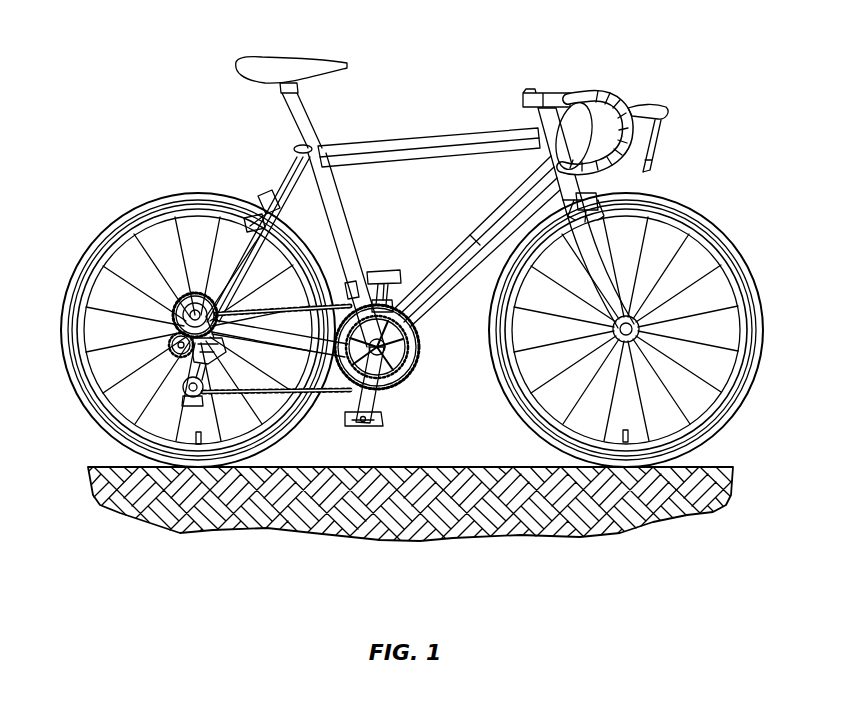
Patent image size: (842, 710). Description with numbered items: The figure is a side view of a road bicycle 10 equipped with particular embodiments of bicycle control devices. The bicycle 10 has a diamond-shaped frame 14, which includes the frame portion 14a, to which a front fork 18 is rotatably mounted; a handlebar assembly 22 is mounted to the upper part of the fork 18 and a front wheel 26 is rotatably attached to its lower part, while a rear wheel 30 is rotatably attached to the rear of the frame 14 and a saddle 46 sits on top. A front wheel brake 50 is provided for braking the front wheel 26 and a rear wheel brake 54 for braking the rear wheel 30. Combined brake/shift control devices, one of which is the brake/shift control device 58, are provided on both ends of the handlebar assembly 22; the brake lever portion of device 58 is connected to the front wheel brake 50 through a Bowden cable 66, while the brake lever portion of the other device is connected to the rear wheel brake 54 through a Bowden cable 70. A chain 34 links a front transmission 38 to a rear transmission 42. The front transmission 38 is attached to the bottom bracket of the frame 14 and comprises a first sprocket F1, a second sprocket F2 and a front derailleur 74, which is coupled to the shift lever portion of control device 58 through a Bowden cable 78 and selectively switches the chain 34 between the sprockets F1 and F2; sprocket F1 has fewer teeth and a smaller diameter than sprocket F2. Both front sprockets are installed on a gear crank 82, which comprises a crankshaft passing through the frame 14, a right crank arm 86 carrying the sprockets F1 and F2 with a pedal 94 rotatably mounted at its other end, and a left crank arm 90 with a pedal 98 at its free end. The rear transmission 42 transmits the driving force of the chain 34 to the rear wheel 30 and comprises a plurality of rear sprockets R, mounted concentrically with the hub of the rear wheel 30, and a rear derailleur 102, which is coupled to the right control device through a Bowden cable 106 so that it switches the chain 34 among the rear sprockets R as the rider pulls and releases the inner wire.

The bicycle 10 is at (601, 62).
The frame 14 is at (402, 116).
The seat tube 14a is at (336, 170).
The front fork 18 is at (596, 277).
The handlebar assembly 22 is at (550, 93).
The front wheel 26 is at (745, 270).
The rear wheel 30 is at (104, 237).
The chain 34 is at (325, 396).
The front transmission 38 is at (432, 338).
The rear transmission 42 is at (131, 343).
The saddle 46 is at (288, 62).
The front wheel brake 50 is at (606, 184).
The rear wheel brake 54 is at (264, 200).
The brake/shift control device 58 is at (695, 99).
The Bowden cable 66 is at (623, 105).
The Bowden cable 70 is at (298, 151).
The front derailleur 74 is at (400, 275).
The Bowden cable 78 is at (479, 270).
The gear crank 82 is at (403, 431).
The right crank arm 86 is at (353, 405).
The left crank arm 90 is at (378, 288).
The pedal 94 is at (370, 428).
The pedal 98 is at (352, 283).
The rear derailleur 102 is at (181, 417).
The Bowden cable 106 is at (182, 378).
The rear sprockets R is at (162, 294).
The first sprocket F1 is at (410, 362).
The second sprocket F2 is at (395, 390).